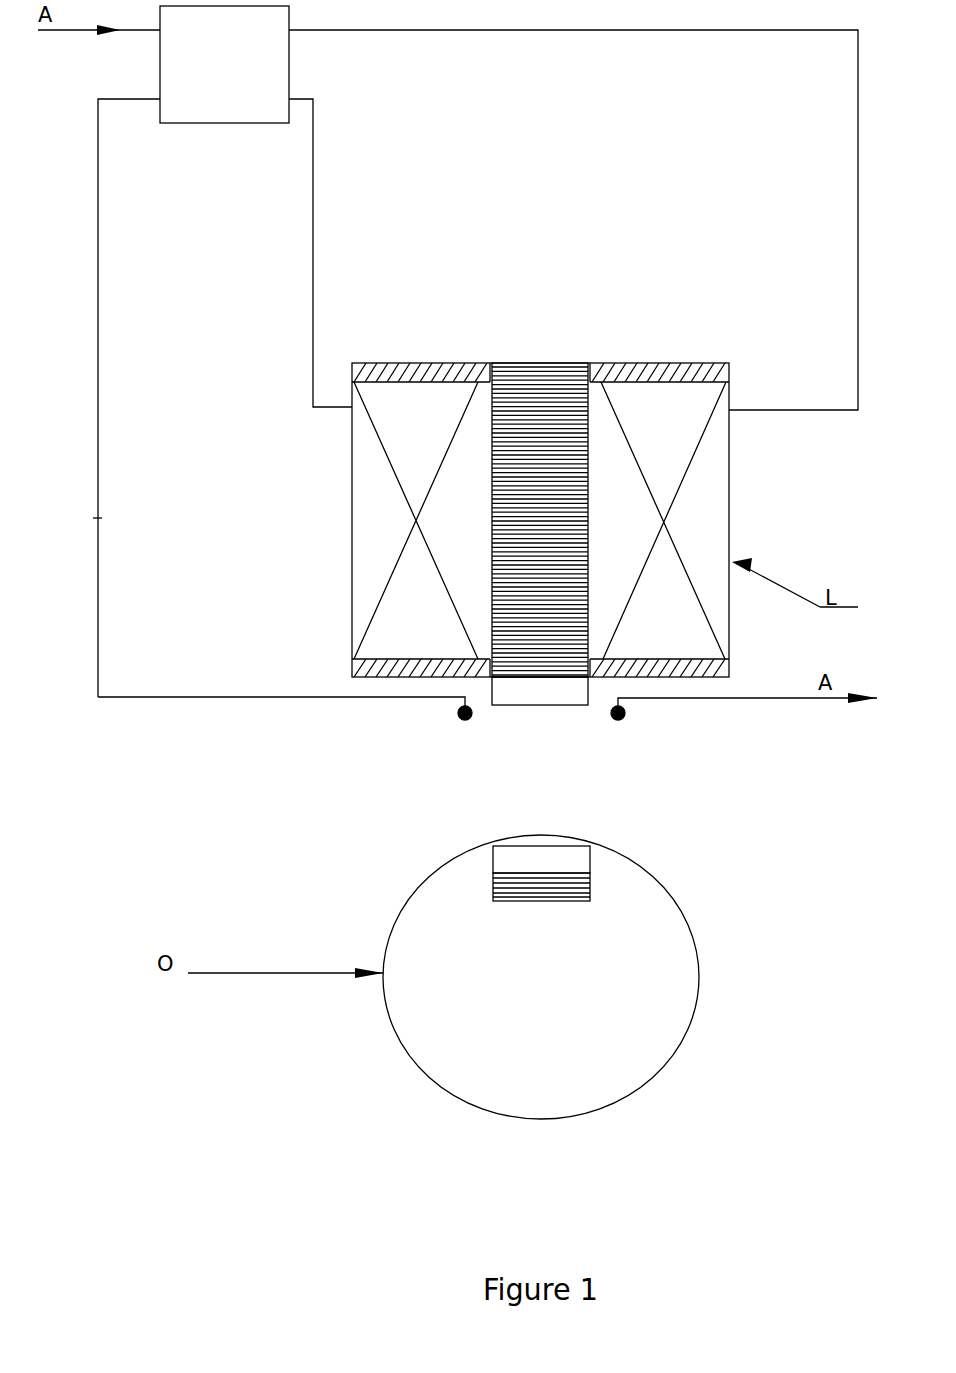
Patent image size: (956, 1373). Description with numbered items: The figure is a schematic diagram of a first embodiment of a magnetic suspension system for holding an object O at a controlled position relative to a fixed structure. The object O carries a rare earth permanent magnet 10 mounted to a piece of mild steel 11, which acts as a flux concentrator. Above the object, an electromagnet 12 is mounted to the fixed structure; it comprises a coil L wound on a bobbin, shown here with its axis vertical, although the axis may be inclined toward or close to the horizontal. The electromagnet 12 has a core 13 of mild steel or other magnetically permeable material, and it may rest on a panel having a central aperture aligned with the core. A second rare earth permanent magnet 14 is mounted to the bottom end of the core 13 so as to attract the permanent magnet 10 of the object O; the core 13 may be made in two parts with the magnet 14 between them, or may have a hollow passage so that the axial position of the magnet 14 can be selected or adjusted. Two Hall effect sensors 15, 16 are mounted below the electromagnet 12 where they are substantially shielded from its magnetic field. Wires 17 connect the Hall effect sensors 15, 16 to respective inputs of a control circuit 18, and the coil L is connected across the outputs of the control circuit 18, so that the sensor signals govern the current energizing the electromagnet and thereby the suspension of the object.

The rare earth permanent magnet 10 is at (575, 861).
The piece of mild steel 11 is at (578, 888).
The electromagnet 12 is at (695, 503).
The core 13 is at (550, 393).
The second rare earth permanent magnet 14 is at (535, 687).
The Hall effect sensor 15 is at (460, 718).
The Hall effect sensor 16 is at (624, 717).
The wires 17 is at (248, 698).
The control circuit 18 is at (224, 64).